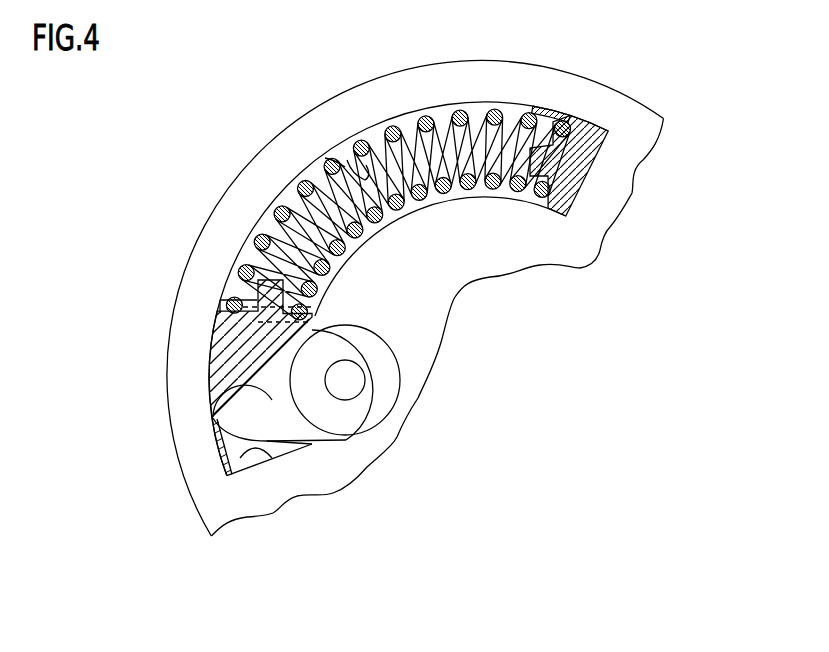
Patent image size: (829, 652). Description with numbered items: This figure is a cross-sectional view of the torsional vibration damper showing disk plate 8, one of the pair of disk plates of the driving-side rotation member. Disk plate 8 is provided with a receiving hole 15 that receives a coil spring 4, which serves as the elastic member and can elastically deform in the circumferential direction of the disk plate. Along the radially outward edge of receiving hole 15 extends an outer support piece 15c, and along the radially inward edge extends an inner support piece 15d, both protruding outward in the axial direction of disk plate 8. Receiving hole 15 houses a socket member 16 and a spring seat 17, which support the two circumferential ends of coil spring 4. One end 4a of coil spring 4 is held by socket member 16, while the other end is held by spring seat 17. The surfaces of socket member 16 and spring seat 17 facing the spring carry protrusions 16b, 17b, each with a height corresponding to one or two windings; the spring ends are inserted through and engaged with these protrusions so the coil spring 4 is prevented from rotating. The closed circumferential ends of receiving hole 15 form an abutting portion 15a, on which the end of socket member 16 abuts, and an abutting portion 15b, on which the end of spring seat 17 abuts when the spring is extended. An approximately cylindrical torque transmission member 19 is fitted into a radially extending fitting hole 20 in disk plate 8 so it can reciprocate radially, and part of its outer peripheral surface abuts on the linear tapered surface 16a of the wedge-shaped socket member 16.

The coil spring 4 is at (388, 120).
The one end of coil spring 4a is at (226, 305).
The disk plate 8 is at (490, 255).
The receiving hole 15 is at (373, 175).
The abutting portion 15a is at (218, 458).
The abutting portion 15b is at (600, 137).
The outer support piece 15c is at (335, 148).
The inner support piece 15d is at (370, 182).
The socket member 16 is at (232, 355).
The tapered surface 16a is at (265, 400).
The protrusion 16b is at (223, 300).
The spring seat 17 is at (568, 122).
The protrusion 17b is at (538, 107).
The torque transmission member 19 is at (375, 408).
The fitting hole 20 is at (280, 428).